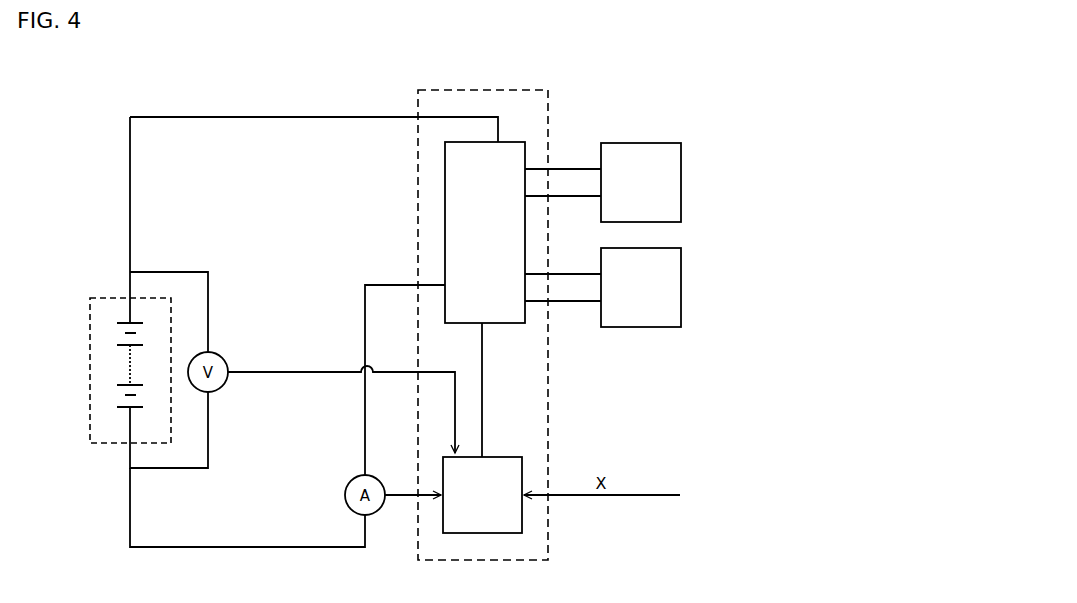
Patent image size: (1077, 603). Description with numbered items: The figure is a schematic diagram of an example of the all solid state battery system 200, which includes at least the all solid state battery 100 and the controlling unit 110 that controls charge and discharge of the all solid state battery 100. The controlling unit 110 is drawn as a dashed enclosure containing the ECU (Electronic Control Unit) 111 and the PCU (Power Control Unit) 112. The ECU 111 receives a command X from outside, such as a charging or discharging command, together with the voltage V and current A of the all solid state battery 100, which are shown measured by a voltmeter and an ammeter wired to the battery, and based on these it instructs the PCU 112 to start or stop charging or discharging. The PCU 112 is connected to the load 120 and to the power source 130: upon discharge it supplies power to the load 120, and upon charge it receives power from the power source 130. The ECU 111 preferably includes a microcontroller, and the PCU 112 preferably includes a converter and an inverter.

The all solid state battery 100 is at (103, 298).
The controlling unit 110 is at (548, 403).
The ECU (Electronic Control Unit) 111 is at (498, 520).
The PCU (Power Control Unit) 112 is at (505, 312).
The load 120 is at (668, 180).
The power source 130 is at (668, 283).
The all solid state battery system 200 is at (647, 83).